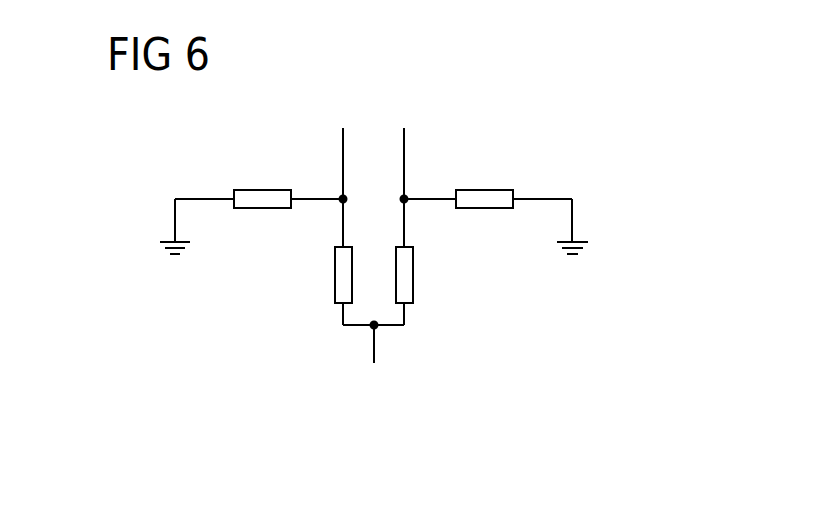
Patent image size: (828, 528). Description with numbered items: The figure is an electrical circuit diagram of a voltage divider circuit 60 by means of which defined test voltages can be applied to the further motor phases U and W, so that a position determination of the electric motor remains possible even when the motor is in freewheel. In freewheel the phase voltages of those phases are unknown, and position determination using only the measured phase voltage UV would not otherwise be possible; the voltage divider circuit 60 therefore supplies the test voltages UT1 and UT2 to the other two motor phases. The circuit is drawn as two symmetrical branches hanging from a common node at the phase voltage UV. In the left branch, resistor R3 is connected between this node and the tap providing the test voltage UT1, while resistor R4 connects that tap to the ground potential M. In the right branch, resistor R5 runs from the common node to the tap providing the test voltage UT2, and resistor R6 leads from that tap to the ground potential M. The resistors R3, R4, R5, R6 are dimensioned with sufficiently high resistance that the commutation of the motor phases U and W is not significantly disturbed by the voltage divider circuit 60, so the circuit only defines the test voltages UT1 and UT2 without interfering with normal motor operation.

The voltage divider circuit 60 is at (557, 149).
The resistor R3 is at (333, 278).
The resistor R4 is at (262, 188).
The resistor R5 is at (416, 278).
The resistor R6 is at (492, 188).
The test voltage UT1 is at (341, 134).
The test voltage UT2 is at (406, 131).
The phase voltage UV is at (375, 350).
The ground potential M is at (174, 215).